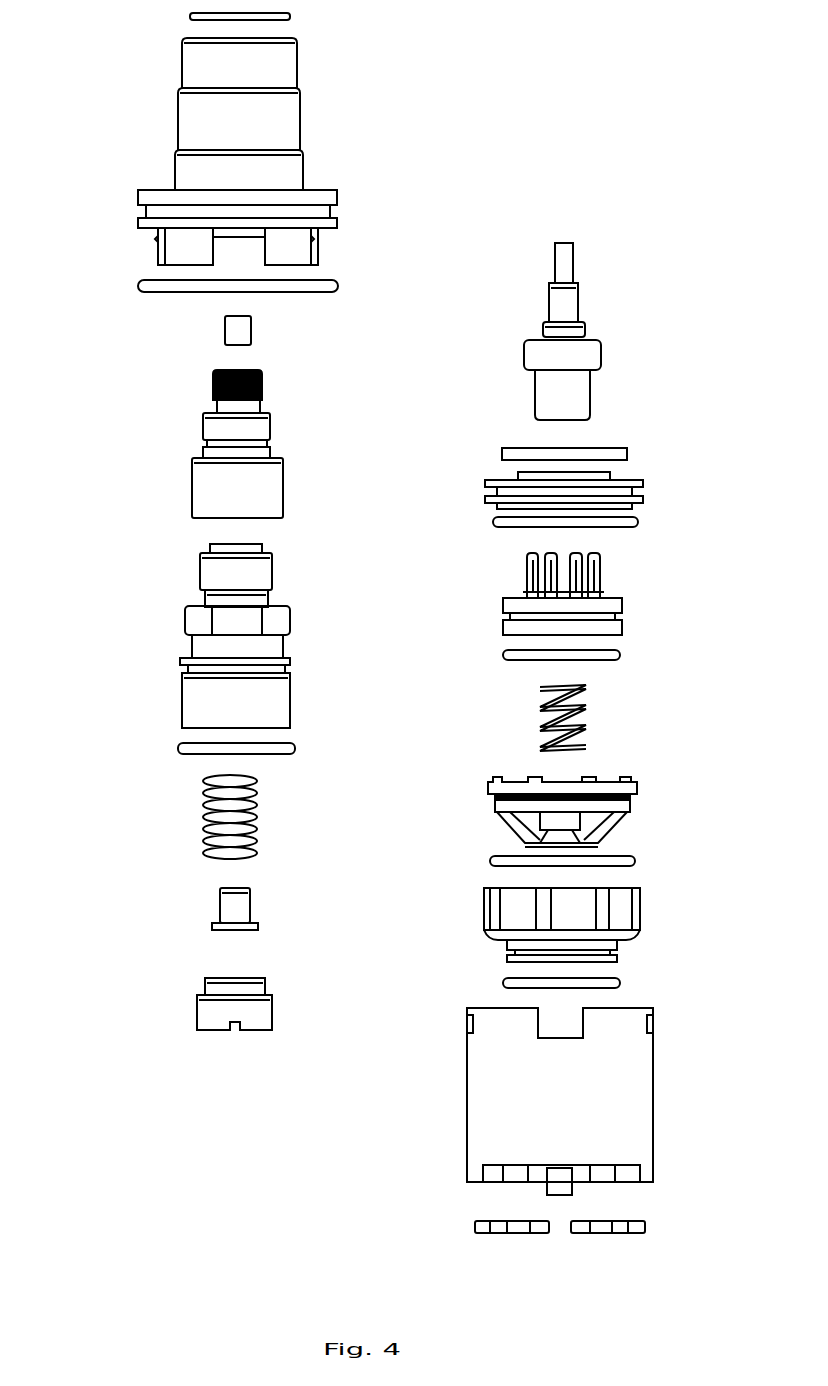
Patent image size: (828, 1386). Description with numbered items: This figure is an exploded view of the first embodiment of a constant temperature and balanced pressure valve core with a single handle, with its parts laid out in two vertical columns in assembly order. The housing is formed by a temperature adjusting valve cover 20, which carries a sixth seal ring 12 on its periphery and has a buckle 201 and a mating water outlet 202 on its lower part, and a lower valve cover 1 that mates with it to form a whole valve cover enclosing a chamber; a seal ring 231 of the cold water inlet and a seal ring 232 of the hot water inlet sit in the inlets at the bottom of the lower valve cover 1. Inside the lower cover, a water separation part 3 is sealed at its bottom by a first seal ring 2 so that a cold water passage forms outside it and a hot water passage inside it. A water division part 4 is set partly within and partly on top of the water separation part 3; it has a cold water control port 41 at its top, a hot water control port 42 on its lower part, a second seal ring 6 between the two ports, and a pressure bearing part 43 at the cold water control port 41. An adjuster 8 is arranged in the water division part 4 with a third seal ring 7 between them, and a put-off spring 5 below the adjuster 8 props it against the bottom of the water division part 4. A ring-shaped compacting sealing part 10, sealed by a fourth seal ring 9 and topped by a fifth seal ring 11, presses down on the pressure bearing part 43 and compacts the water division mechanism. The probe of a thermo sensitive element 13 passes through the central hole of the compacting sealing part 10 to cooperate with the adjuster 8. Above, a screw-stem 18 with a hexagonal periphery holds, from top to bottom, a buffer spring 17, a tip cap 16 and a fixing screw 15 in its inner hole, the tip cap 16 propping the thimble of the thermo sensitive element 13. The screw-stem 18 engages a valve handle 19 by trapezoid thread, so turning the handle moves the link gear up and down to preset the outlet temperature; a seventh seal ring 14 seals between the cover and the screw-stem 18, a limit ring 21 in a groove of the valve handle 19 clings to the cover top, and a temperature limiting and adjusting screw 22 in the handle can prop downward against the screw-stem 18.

The lower valve cover 1 is at (656, 1181).
The first seal ring 2 is at (625, 984).
The water separation part 3 is at (644, 934).
The water division part 4 is at (637, 806).
The cold water control port 41 is at (610, 781).
The hot water control port 42 is at (628, 829).
The pressure bearing part 43 is at (634, 782).
The put-off spring 5 is at (593, 728).
The second seal ring 6 is at (639, 860).
The third seal ring 7 is at (629, 650).
The adjuster 8 is at (626, 603).
The fourth seal ring 9 is at (643, 521).
The compacting sealing part 10 is at (648, 483).
The fifth seal ring 11 is at (631, 455).
The sixth seal ring 12 is at (136, 283).
The thermo sensitive element 13 is at (608, 360).
The seventh seal ring 14 is at (176, 747).
The fixing screw 15 is at (196, 1012).
The tip cap 16 is at (218, 907).
The buffer spring 17 is at (201, 826).
The screw-stem 18 is at (181, 628).
The valve handle 19 is at (201, 435).
The temperature adjusting valve cover 20 is at (176, 135).
The buckle 201 is at (155, 240).
The mating water outlet 202 is at (243, 253).
The limit ring 21 is at (186, 17).
The temperature limiting and adjusting screw 22 is at (223, 333).
The seal ring of the cold water inlet 231 is at (541, 1234).
The seal ring of the hot water inlet 232 is at (649, 1232).